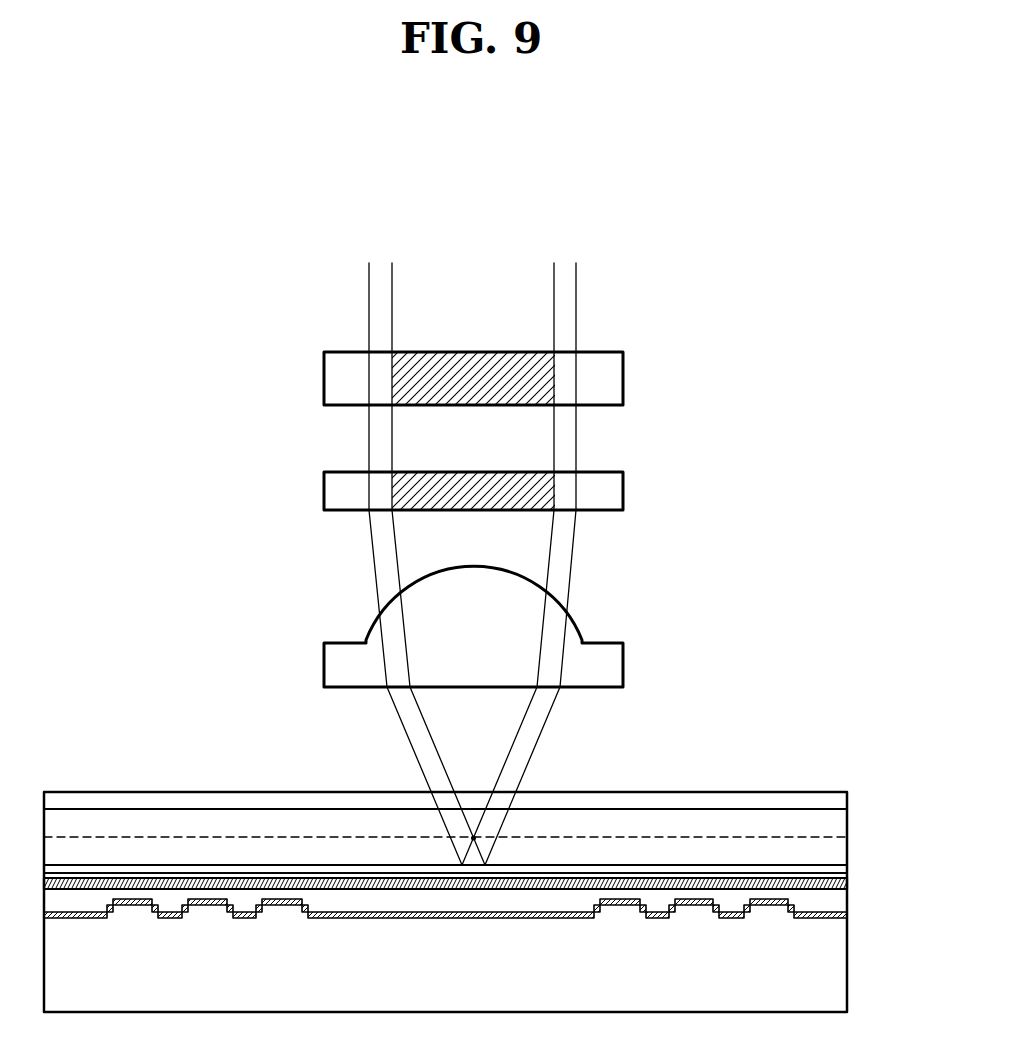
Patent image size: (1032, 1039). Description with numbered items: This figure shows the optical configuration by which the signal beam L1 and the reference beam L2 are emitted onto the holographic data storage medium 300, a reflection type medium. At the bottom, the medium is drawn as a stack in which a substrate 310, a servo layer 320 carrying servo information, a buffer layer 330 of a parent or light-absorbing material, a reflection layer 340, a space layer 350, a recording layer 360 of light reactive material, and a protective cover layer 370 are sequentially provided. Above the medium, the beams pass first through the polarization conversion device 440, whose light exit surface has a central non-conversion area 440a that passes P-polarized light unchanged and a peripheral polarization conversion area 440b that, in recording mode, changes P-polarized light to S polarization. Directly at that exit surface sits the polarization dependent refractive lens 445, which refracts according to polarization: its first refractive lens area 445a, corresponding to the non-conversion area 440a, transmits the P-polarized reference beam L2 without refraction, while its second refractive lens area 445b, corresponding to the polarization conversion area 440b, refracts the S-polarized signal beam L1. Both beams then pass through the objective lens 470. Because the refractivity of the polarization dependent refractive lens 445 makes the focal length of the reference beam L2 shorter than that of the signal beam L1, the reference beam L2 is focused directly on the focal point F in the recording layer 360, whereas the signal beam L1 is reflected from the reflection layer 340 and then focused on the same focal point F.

The holographic data storage medium 300 is at (484, 832).
The substrate 310 is at (842, 973).
The servo layer 320 is at (840, 915).
The buffer layer 330 is at (838, 900).
The reflection layer 340 is at (847, 887).
The space layer 350 is at (843, 871).
The recording layer 360 is at (835, 836).
The cover layer 370 is at (838, 803).
The polarization conversion device 440 is at (592, 332).
The non-conversion area 440a is at (477, 352).
The polarization conversion area 440b is at (565, 352).
The polarization dependent refractive lens 445 is at (592, 443).
The first refractive lens area 445a is at (477, 472).
The second refractive lens area 445b is at (565, 472).
The objective lens 470 is at (623, 665).
The signal beam L1 is at (385, 567).
The reference beam L2 is at (515, 538).
The focal point F is at (474, 837).